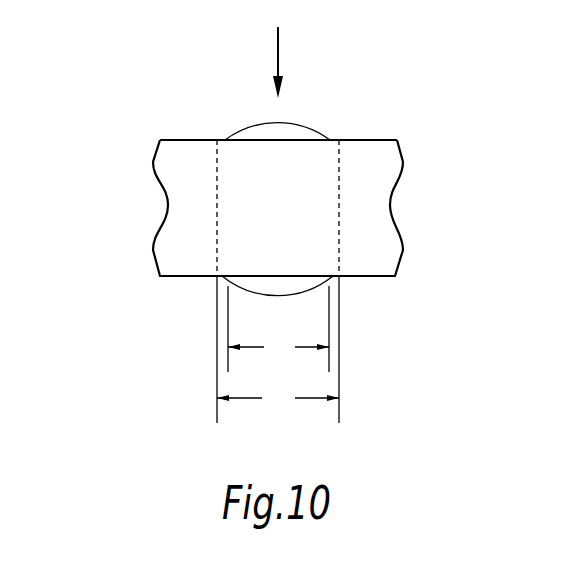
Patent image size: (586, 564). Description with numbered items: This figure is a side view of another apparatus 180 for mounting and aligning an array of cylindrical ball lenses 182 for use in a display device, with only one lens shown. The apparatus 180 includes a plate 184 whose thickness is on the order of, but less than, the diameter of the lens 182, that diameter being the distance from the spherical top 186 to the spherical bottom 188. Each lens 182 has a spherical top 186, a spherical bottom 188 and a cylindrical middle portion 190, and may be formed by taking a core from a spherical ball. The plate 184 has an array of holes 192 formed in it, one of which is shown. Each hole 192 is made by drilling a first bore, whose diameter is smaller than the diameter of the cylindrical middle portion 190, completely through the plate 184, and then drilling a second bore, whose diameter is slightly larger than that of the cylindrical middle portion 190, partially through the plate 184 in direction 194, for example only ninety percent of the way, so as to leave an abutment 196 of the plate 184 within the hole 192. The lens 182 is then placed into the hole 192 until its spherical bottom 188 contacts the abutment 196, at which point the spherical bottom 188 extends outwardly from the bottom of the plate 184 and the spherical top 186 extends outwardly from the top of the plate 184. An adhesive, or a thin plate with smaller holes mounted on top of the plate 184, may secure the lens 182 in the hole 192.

The apparatus 180 is at (138, 86).
The cylindrical ball lens 182 is at (291, 213).
The plate 184 is at (372, 139).
The spherical top 186 is at (301, 125).
The spherical bottom 188 is at (293, 294).
The cylindrical middle portion 190 is at (340, 187).
The hole 192 is at (227, 139).
The direction 194 is at (279, 41).
The abutment 196 is at (216, 278).